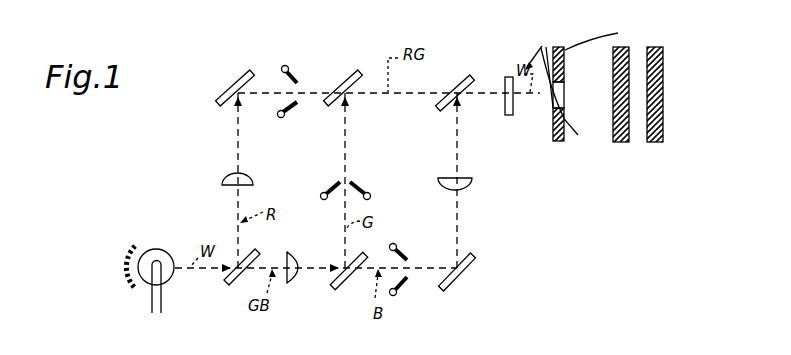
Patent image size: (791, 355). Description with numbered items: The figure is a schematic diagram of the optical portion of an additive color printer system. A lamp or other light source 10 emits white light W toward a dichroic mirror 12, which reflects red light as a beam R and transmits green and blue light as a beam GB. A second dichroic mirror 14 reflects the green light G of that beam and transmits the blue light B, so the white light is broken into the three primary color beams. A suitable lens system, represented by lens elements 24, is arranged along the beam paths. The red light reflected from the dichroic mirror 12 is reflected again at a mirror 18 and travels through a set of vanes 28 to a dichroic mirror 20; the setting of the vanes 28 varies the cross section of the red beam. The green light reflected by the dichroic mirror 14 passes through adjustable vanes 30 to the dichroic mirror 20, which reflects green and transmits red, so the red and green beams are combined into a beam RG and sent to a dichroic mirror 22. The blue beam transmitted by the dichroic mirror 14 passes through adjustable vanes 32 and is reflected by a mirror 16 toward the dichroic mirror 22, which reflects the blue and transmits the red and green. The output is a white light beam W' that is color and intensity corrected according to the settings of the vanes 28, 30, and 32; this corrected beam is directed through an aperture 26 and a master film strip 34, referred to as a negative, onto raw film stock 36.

The light source 10 is at (164, 250).
The dichroic mirror 12 is at (235, 283).
The dichroic mirror 14 is at (352, 284).
The mirror 16 is at (464, 281).
The mirror 18 is at (236, 78).
The dichroic mirror 20 is at (332, 74).
The dichroic mirror 22 is at (447, 88).
The lens elements 24 is at (222, 182).
The aperture 26 is at (548, 47).
The vanes 28 is at (305, 100).
The vanes 30 is at (352, 177).
The vanes 32 is at (415, 277).
The master film strip 34 is at (618, 47).
The raw film stock 36 is at (656, 47).